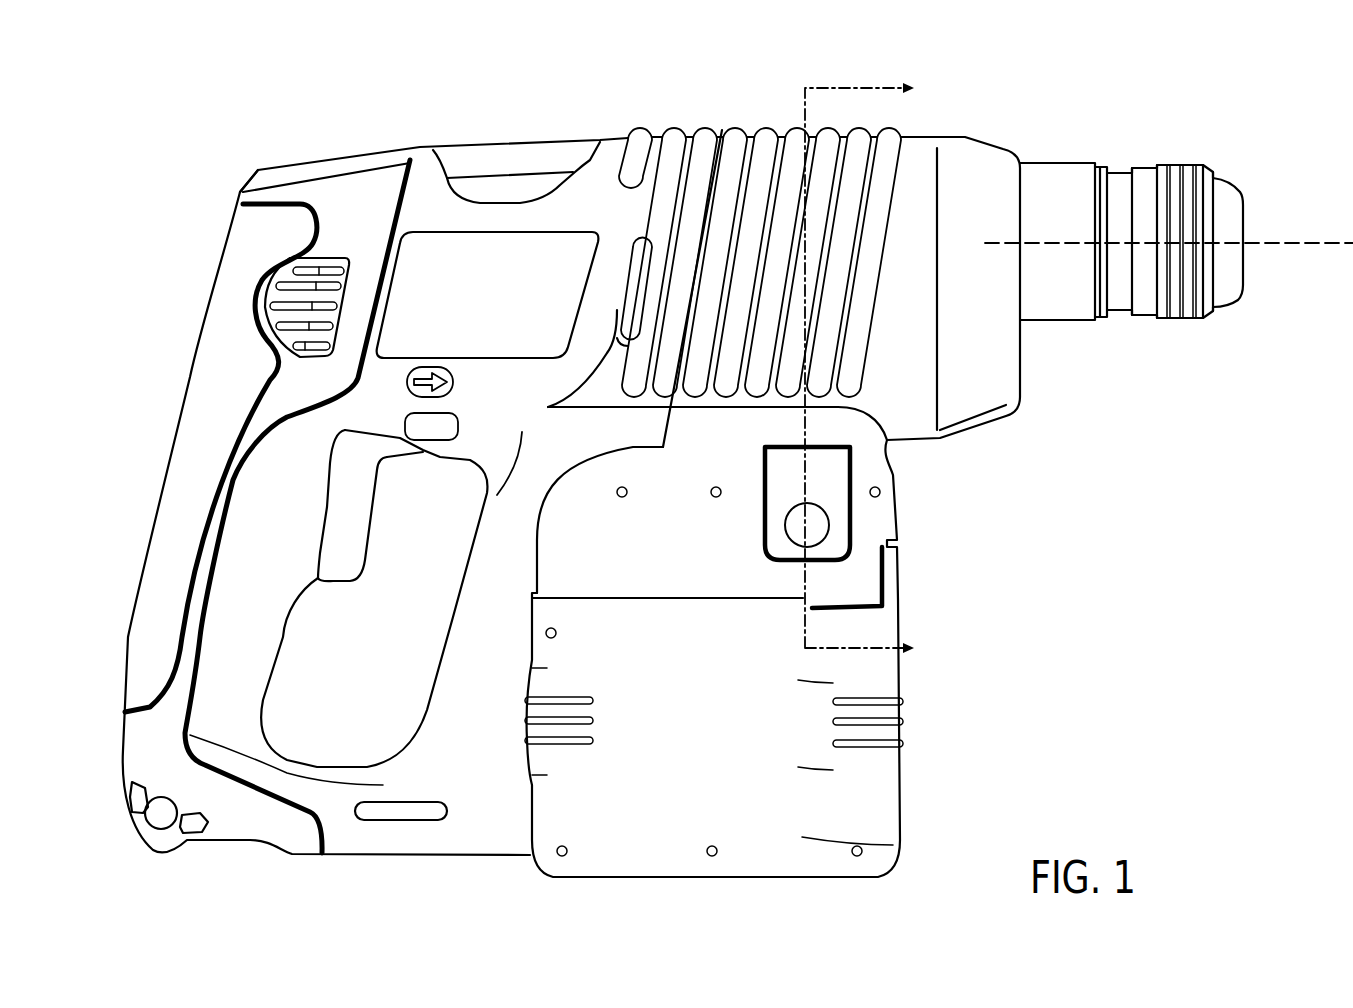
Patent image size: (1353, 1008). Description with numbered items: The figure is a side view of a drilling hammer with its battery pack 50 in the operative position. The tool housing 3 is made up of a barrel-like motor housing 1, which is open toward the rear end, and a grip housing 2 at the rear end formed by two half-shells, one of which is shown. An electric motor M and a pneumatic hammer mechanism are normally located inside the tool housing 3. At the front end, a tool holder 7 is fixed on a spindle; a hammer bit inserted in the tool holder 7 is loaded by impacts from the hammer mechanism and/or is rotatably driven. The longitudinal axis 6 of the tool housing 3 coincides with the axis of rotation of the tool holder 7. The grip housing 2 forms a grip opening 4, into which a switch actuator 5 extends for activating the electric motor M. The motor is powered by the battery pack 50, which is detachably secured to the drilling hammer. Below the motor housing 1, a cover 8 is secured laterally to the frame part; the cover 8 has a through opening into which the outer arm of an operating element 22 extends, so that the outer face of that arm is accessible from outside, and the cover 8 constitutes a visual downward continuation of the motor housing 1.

The motor housing 1 is at (985, 170).
The grip housing 2 is at (493, 833).
The tool housing 3 is at (463, 97).
The grip opening 4 is at (365, 696).
The switch actuator 5 is at (345, 517).
The longitudinal axis 6 is at (1248, 238).
The tool holder 7 is at (1202, 168).
The cover 8 is at (875, 516).
The operating element 22 is at (820, 486).
The battery pack 50 is at (850, 794).
The electric motor M is at (514, 185).